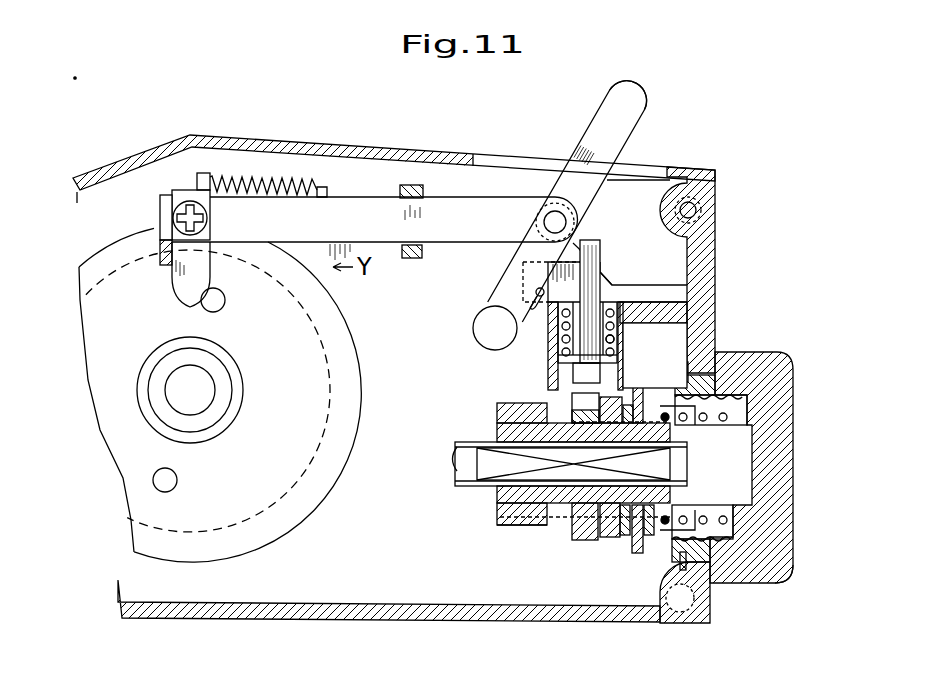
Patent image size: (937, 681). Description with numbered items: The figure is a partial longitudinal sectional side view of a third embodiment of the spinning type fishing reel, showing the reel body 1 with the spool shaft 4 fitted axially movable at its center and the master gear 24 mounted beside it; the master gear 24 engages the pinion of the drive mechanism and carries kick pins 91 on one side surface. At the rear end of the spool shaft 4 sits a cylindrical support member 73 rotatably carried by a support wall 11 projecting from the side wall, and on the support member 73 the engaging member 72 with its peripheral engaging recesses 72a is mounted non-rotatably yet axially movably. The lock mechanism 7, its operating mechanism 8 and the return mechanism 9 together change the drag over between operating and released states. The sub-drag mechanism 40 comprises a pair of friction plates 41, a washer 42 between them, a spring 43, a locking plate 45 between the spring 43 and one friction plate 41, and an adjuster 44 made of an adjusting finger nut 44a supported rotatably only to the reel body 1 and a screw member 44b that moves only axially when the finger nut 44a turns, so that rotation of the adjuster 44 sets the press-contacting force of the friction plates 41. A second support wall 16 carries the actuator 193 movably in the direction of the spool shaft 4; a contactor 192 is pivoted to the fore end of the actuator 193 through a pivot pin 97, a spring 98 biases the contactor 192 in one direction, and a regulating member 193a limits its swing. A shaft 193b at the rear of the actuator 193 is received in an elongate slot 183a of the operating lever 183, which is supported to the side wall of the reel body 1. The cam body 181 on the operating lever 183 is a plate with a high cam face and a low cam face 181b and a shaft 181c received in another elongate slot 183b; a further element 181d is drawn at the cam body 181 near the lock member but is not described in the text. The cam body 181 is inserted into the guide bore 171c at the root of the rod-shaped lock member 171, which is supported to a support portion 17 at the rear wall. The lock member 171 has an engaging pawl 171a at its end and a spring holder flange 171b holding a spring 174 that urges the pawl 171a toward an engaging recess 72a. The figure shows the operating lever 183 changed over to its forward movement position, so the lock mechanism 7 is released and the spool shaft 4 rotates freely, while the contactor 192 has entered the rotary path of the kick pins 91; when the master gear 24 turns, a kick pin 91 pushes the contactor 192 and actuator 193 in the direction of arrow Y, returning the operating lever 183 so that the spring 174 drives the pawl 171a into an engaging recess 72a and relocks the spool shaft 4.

The reel body 1 is at (318, 143).
The spool shaft 4 is at (455, 456).
The lock mechanism 7 is at (630, 418).
The operating mechanism 8 is at (636, 124).
The return mechanism 9 is at (188, 183).
The support wall 11 is at (510, 520).
The support wall 16 is at (413, 187).
The support portion 17 is at (553, 348).
The master gear 24 is at (345, 438).
The sub-drag mechanism 40 is at (673, 592).
The friction plates 41 is at (625, 535).
The washer 42 is at (637, 553).
The spring 43 is at (706, 540).
The adjuster 44 is at (770, 583).
The adjusting finger nut 44a is at (785, 576).
The screw member 44b is at (728, 545).
The locking plate 45 is at (689, 365).
The engaging member 72 is at (572, 538).
The engaging recesses 72a is at (497, 405).
The support member 73 is at (497, 505).
The kick pins 91 is at (219, 300).
The pivot pin 97 is at (173, 210).
The spring 98 is at (260, 178).
The lock member 171 is at (580, 332).
The engaging pawl 171a is at (572, 400).
The spring holder flange 171b is at (566, 365).
The guide bore 171c is at (598, 262).
The spring 174 is at (617, 340).
The cam body 181 is at (630, 292).
The low cam face 181b is at (608, 280).
The shaft 181c is at (537, 292).
The roller 181d is at (582, 246).
The operating lever 183 is at (606, 111).
The elongate slot 183a is at (578, 235).
The elongate slot 183b is at (473, 326).
The contactor 192 is at (175, 288).
The actuator 193 is at (368, 203).
The regulating member 193a is at (162, 252).
The shaft 193b is at (548, 219).